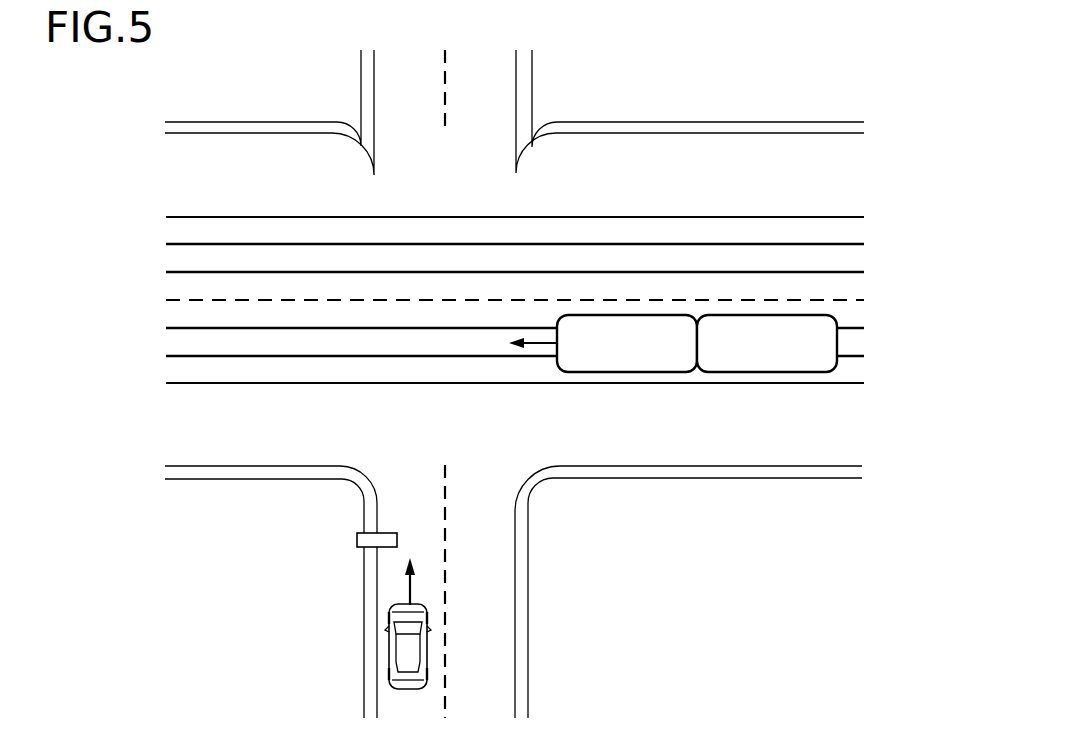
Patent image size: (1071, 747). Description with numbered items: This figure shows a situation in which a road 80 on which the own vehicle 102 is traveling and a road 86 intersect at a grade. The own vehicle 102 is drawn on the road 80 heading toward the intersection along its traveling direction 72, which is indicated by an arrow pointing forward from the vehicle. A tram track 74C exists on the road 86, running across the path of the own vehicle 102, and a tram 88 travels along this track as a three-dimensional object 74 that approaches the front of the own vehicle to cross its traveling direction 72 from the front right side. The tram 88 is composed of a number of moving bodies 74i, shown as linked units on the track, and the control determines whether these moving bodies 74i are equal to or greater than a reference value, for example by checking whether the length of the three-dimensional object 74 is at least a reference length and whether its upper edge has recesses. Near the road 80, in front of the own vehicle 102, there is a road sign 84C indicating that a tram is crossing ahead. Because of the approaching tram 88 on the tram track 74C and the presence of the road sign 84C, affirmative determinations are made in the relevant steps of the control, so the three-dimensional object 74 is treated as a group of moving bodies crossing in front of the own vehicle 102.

The three-dimensional object 74 is at (514, 203).
The tram track 74C is at (242, 243).
The tram 88 is at (673, 305).
The moving bodies 74i is at (622, 362).
The road 86 is at (203, 447).
The road sign 84C is at (357, 537).
The road 80 is at (427, 540).
The traveling direction 72 is at (410, 587).
The vehicle 102 is at (390, 657).